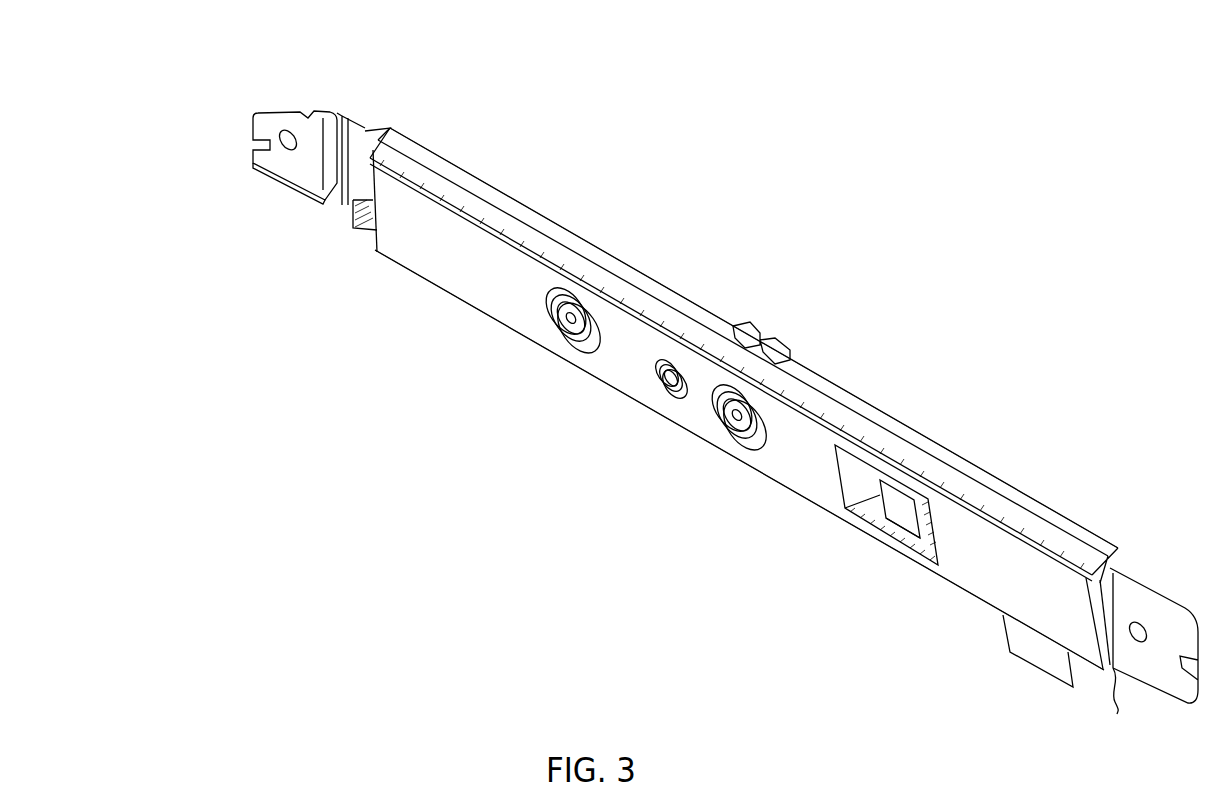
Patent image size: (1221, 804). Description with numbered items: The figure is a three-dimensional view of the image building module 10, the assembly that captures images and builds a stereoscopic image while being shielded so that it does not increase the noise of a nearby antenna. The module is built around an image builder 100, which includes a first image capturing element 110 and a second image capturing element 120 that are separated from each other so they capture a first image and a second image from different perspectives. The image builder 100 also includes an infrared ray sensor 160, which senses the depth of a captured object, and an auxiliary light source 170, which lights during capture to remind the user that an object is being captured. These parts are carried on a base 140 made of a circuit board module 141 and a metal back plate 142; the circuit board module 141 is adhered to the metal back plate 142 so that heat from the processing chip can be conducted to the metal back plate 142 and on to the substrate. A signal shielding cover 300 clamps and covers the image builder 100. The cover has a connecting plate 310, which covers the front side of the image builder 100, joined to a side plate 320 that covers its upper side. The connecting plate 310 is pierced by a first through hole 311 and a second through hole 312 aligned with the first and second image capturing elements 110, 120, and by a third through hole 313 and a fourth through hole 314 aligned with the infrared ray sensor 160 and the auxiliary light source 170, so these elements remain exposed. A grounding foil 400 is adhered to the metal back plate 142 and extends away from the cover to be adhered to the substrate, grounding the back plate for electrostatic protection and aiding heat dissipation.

The image building module 10 is at (124, 49).
The image builder 100 is at (370, 116).
The first image capturing element 110 is at (566, 334).
The second image capturing element 120 is at (733, 418).
The base 140 is at (213, 177).
The circuit board module 141 is at (362, 193).
The metal back plate 142 is at (255, 165).
The infrared ray sensor 160 is at (898, 507).
The auxiliary light source 170 is at (665, 383).
The signal shielding cover 300 is at (373, 243).
The connecting plate 310 is at (448, 266).
The first through hole 311 is at (580, 354).
The second through hole 312 is at (740, 445).
The third through hole 313 is at (910, 555).
The fourth through hole 314 is at (668, 399).
The side plate 320 is at (1073, 525).
The grounding foil 400 is at (1017, 632).